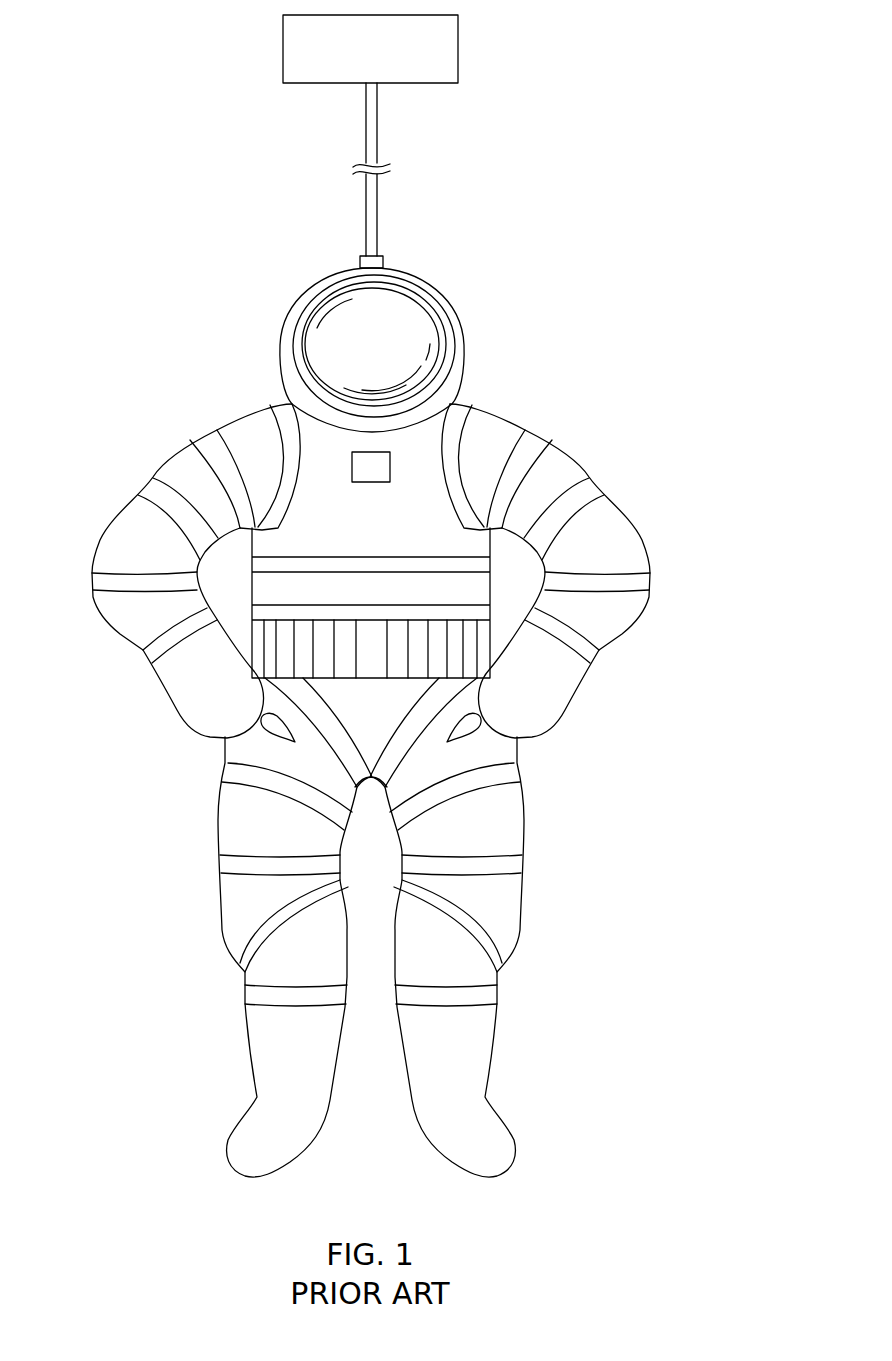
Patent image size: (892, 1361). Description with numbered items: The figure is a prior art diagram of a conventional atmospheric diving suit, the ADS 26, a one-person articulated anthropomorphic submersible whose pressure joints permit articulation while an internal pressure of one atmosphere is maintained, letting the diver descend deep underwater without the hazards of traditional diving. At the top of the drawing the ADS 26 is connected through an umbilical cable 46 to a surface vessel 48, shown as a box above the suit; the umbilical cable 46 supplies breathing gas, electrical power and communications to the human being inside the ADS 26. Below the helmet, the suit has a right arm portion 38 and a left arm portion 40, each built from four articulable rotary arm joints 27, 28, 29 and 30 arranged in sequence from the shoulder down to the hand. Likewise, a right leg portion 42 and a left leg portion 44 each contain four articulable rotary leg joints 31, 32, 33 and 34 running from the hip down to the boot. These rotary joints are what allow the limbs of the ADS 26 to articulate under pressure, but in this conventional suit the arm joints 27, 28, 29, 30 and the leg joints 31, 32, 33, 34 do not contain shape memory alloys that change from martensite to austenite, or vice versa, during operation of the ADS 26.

The atmospheric diving suit (ADS) 26 is at (600, 237).
The articulable rotary arm joint 27 is at (242, 418).
The articulable rotary arm joint 28 is at (177, 457).
The articulable rotary arm joint 29 is at (110, 535).
The articulable rotary arm joint 30 is at (120, 626).
The articulable rotary leg joint 31 is at (237, 749).
The articulable rotary leg joint 32 is at (228, 830).
The articulable rotary leg joint 33 is at (227, 920).
The articulable rotary leg joint 34 is at (243, 978).
The right arm portion 38 is at (66, 427).
The left arm portion 40 is at (676, 427).
The right leg portion 42 is at (121, 910).
The left leg portion 44 is at (621, 910).
The umbilical cable 46 is at (365, 127).
The surface vessel 48 is at (297, 42).